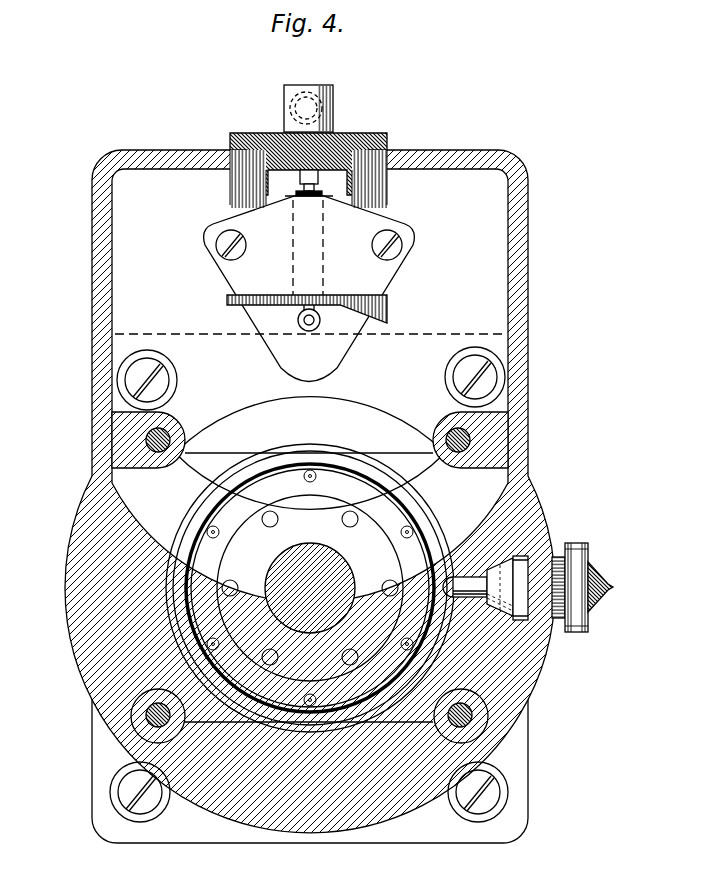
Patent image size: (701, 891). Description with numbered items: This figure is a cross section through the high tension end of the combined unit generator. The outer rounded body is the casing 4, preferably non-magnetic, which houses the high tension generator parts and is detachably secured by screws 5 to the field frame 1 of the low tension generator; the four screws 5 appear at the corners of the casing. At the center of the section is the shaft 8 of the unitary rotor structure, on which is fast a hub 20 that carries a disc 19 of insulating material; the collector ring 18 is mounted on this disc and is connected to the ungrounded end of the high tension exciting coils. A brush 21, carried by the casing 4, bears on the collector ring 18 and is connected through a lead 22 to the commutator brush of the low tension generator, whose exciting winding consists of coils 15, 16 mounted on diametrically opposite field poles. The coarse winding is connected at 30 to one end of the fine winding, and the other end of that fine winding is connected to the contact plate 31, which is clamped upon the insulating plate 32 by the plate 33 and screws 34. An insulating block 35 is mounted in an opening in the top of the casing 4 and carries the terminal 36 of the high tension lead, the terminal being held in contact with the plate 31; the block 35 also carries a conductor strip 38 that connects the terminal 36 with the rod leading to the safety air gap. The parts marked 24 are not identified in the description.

The field frame 1 is at (203, 335).
The casing 4 is at (66, 583).
The screws 5 is at (161, 378).
The shaft 8 is at (283, 582).
The exciting coil 15 is at (310, 425).
The exciting coil 16 is at (310, 606).
The collector ring 18 is at (425, 678).
The insulating disc 19 is at (310, 593).
The hub 20 is at (310, 588).
The brush 21 is at (450, 597).
The lead 22 is at (610, 590).
The clamp bolts and bosses 24 is at (170, 433).
The winding connection 30 is at (297, 193).
The contact plate 31 is at (324, 258).
The insulating plate 32 is at (368, 318).
The clamping plate 33 is at (387, 282).
The screws 34 is at (236, 255).
The insulating block 35 is at (240, 135).
The terminal 36 is at (333, 94).
The conductor strip 38 is at (320, 171).